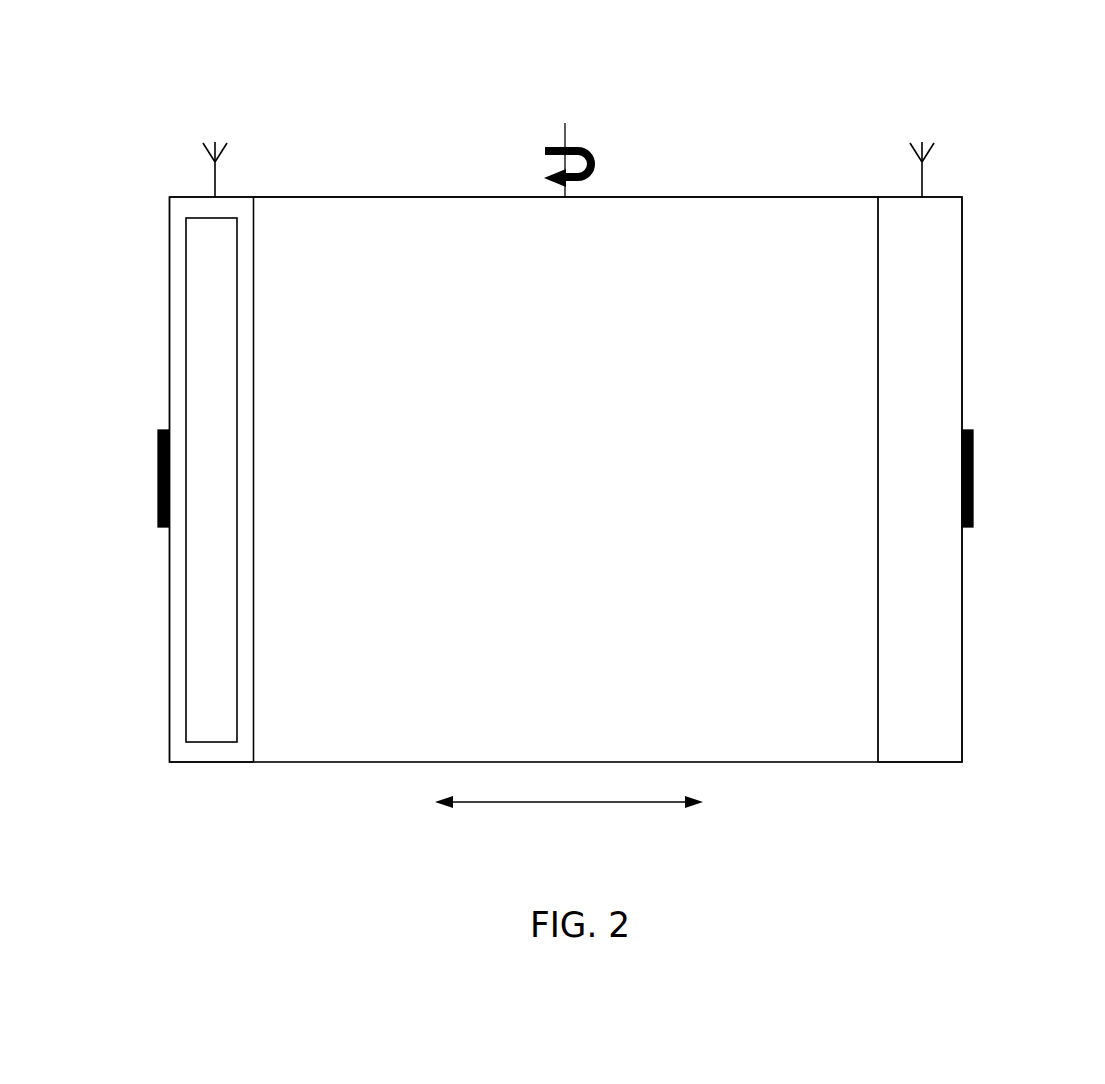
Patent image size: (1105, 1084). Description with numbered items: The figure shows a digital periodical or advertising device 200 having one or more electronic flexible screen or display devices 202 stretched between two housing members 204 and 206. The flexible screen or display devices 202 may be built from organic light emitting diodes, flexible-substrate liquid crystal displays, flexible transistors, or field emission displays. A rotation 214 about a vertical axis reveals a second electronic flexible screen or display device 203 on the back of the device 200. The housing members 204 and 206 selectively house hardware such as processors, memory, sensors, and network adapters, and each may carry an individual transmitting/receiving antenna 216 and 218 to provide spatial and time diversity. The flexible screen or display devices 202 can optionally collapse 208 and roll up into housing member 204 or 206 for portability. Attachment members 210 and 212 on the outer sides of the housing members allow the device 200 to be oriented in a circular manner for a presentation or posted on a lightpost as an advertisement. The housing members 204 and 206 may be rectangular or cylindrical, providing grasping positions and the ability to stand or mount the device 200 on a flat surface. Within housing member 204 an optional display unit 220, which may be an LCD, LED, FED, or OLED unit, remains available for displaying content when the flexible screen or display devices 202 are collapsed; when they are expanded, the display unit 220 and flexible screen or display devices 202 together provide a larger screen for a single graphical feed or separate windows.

The digital periodical or advertising device 200 is at (917, 99).
The electronic flexible screen or display device 202 is at (742, 197).
The second electronic flexible screen or display device 203 is at (413, 197).
The housing member 204 is at (169, 233).
The housing member 206 is at (962, 285).
The collapse 208 is at (658, 803).
The attachment member 210 is at (158, 450).
The attachment member 212 is at (973, 448).
The rotation 214 is at (595, 163).
The transmitting/receiving antenna 216 is at (922, 178).
The transmitting/receiving antenna 218 is at (215, 180).
The display unit 220 is at (186, 695).